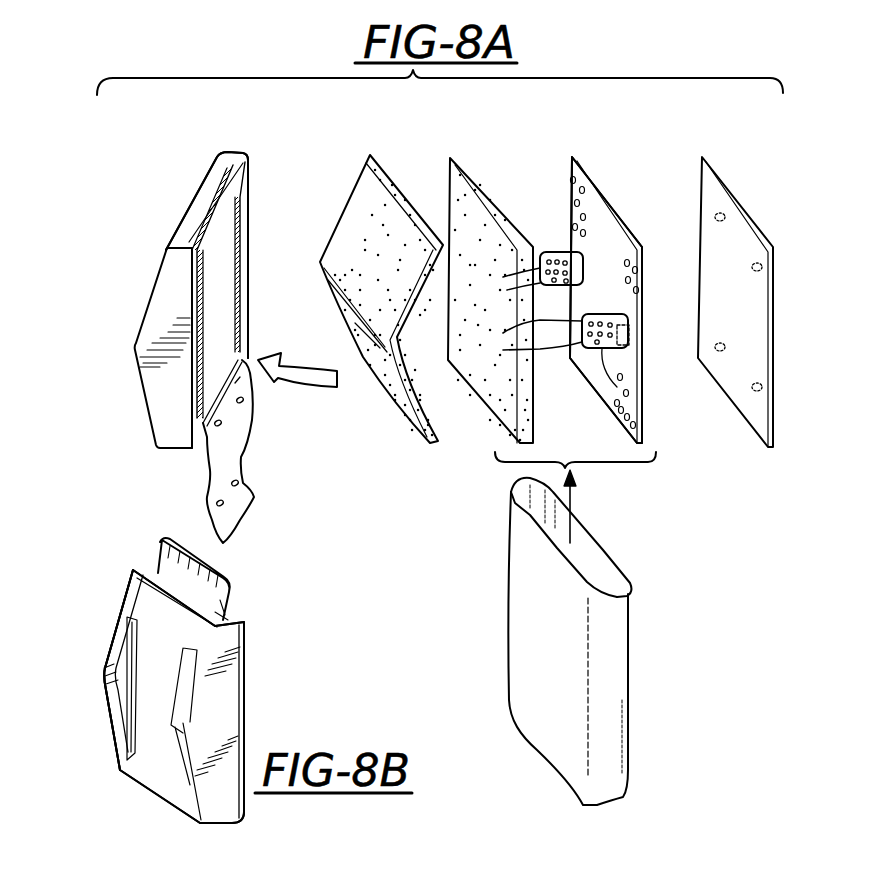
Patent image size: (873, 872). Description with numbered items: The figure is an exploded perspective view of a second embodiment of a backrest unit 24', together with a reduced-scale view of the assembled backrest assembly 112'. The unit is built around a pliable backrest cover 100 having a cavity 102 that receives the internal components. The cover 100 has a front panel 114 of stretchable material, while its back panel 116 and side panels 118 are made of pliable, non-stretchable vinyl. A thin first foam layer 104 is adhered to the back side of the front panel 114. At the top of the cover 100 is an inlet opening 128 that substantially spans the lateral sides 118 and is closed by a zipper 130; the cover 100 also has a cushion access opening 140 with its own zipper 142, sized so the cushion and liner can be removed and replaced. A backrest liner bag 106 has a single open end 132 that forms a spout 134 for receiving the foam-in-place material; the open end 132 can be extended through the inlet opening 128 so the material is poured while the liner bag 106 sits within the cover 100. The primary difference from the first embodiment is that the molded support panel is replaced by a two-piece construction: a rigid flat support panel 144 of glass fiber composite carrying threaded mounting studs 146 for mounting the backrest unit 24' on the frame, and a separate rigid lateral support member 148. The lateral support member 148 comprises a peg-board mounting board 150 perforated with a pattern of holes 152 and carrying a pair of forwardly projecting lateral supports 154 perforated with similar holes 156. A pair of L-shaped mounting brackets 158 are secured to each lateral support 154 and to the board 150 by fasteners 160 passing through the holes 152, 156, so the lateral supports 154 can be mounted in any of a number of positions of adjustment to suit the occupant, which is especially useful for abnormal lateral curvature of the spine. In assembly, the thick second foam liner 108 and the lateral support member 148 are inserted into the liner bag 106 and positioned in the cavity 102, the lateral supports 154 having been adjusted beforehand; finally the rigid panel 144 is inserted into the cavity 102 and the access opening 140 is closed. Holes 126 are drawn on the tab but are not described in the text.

In FIG. 8A, the backrest cover 100 is at (255, 204).
In FIG. 8A, the cavity 102 is at (240, 240).
In FIG. 8A, the first foam layer 104 is at (400, 187).
In FIG. 8A, the backrest liner bag 106 is at (630, 732).
In FIG. 8A, the second foam liner 108 is at (477, 163).
In FIG. 8A, the front panel 114 is at (208, 168).
In FIG. 8B, the front panel 114 is at (150, 760).
In FIG. 8A, the back panel 116 is at (204, 484).
In FIG. 8A, the side panels 118 is at (246, 156).
In FIG. 8A, the holes 126 is at (219, 424).
In FIG. 8A, the inlet opening 128 is at (207, 200).
In FIG. 8A, the zipper 130 is at (185, 240).
In FIG. 8A, the open end 132 is at (625, 620).
In FIG. 8A, the spout 134 is at (605, 570).
In FIG. 8A, the cushion access opening 140 is at (242, 265).
In FIG. 8A, the zipper 142 is at (192, 388).
In FIG. 8A, the support panel 144 is at (737, 190).
In FIG. 8A, the threaded mounting studs 146 is at (733, 212).
In FIG. 8A, the lateral support member 148 is at (626, 203).
In FIG. 8A, the mounting board 150 is at (600, 190).
In FIG. 8A, the holes 152 is at (573, 188).
In FIG. 8A, the lateral supports 154 is at (580, 194).
In FIG. 8A, the holes 156 is at (524, 316).
In FIG. 8A, the L-shaped mounting brackets 158 is at (577, 250).
In FIG. 8A, the fasteners 160 is at (583, 262).
In FIG. 8B, the backrest unit 24' is at (135, 677).
In FIG. 8B, the backrest assembly 112' is at (71, 674).